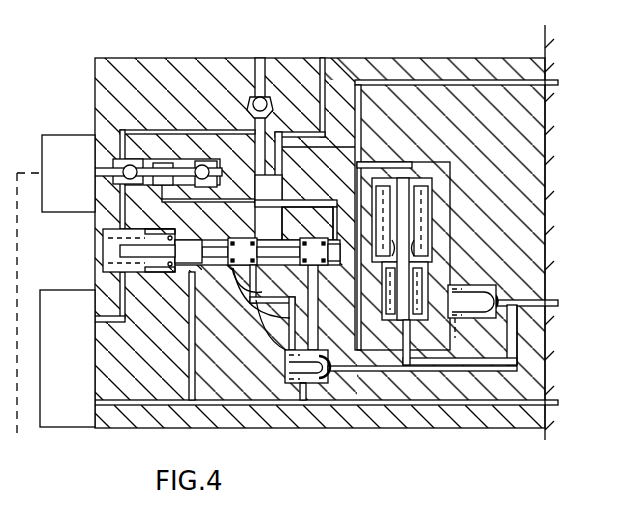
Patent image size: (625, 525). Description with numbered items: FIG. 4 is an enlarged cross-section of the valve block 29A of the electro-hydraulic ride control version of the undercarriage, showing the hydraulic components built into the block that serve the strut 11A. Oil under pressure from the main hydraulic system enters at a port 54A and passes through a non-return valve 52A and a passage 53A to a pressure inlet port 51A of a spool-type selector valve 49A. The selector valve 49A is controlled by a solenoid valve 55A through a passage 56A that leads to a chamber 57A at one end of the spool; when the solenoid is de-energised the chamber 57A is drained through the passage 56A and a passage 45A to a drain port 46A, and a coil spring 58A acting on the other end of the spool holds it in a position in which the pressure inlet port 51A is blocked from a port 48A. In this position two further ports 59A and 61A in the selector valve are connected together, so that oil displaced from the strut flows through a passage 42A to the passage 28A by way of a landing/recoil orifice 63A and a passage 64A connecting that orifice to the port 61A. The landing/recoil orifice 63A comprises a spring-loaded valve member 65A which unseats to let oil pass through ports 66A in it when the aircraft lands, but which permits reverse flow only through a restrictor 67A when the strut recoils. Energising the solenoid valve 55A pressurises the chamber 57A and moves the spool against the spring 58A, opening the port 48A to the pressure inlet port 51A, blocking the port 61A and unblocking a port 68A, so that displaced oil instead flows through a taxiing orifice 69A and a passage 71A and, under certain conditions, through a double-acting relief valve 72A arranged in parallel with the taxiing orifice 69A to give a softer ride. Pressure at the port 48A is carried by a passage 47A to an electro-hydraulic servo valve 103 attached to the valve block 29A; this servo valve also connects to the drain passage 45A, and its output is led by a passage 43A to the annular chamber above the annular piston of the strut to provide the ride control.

The valve block 29A is at (159, 57).
The passage 28A is at (470, 82).
The strut 11A is at (544, 46).
The port 54A is at (262, 58).
The non-return valve 52A is at (266, 98).
The drain port 46A is at (322, 58).
The drain passage 45A is at (186, 131).
The solenoid valve 55A is at (80, 134).
The passage 53A is at (246, 168).
The passage 56A is at (302, 202).
The port 59A is at (307, 223).
The pressure inlet port 51A is at (200, 231).
The selector valve 49A is at (105, 242).
The coil spring 58A is at (105, 268).
The port 48A is at (183, 272).
The chamber 57A is at (340, 268).
The port 68A is at (258, 291).
The port 61A is at (256, 308).
The passage 71A is at (262, 330).
The spring-loaded valve member 65A is at (314, 350).
The passage 64A is at (288, 349).
The landing/recoil orifice 63A is at (303, 388).
The ports 66A is at (328, 384).
The restrictor 67A is at (463, 330).
The relief valve 72A is at (436, 212).
The taxiing orifice 69A is at (456, 284).
The passage 42A is at (523, 345).
The passage 43A is at (526, 420).
The passage 47A is at (101, 358).
The electro-hydraulic servo valve 103 is at (72, 418).